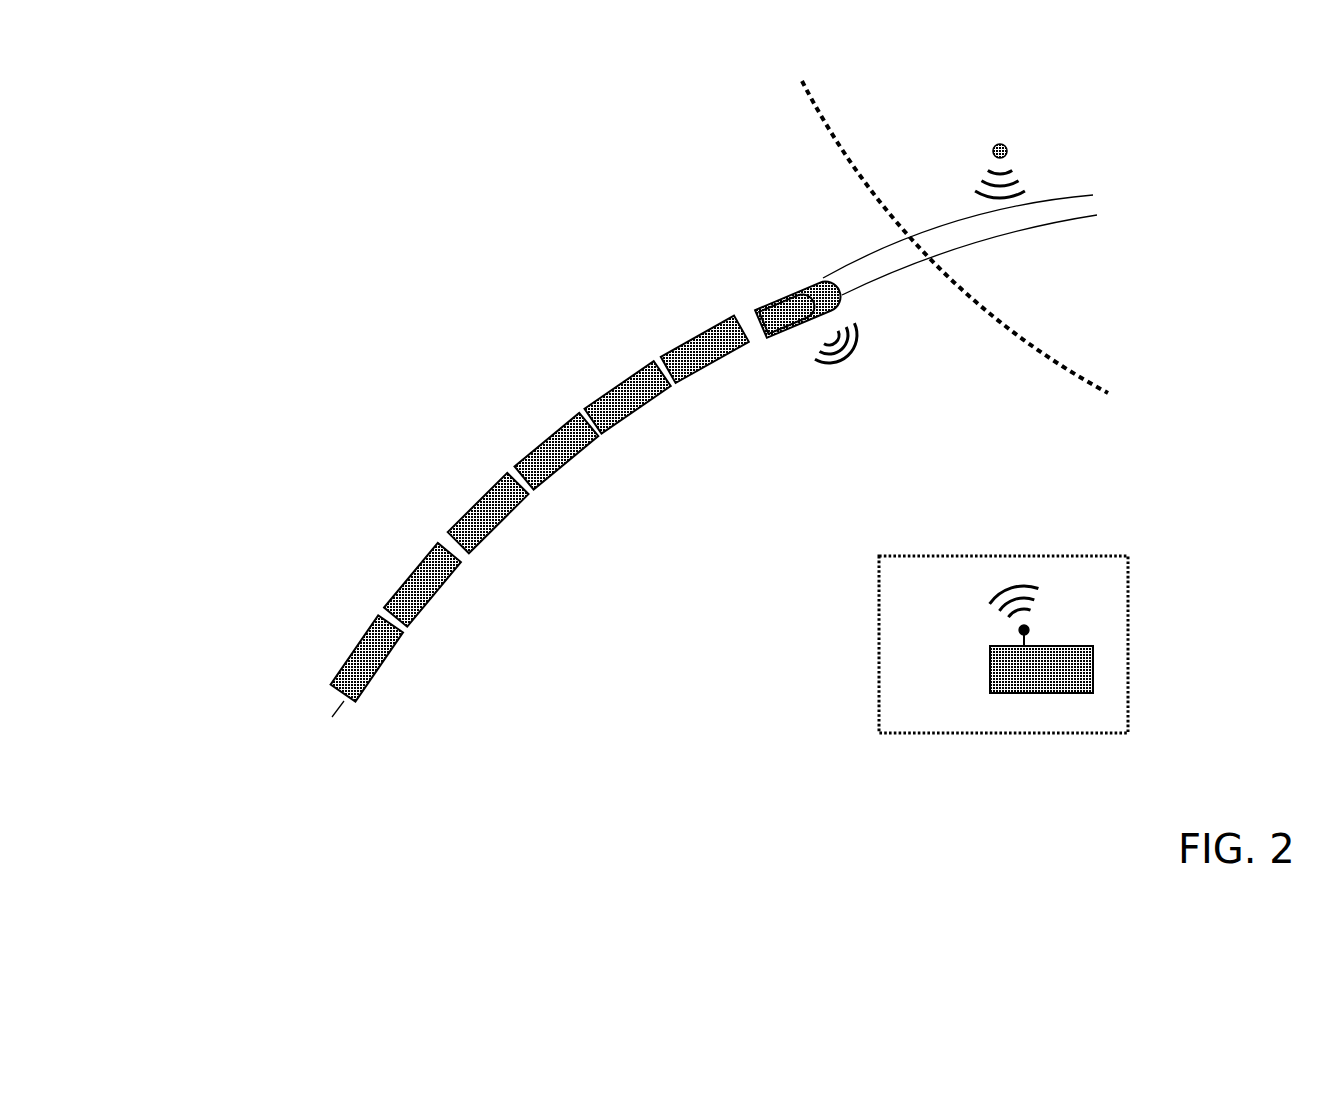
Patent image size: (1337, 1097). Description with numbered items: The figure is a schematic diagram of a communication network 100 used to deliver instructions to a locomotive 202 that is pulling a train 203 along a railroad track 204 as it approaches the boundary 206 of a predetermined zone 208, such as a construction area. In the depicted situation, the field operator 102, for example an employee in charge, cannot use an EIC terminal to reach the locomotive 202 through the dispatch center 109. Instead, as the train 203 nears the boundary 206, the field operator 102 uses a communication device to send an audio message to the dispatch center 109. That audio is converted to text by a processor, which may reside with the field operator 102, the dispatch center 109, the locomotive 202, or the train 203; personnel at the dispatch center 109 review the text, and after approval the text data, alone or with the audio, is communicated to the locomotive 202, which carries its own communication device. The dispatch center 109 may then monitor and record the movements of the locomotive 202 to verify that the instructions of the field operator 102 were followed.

The communication network 100 is at (396, 274).
The field operator 102 is at (997, 142).
The dispatch center 109 is at (988, 692).
The locomotive 202 is at (813, 280).
The train 203 is at (570, 421).
The railroad track 204 is at (325, 697).
The boundary 206 is at (822, 116).
The predetermined zone 208 is at (1033, 305).